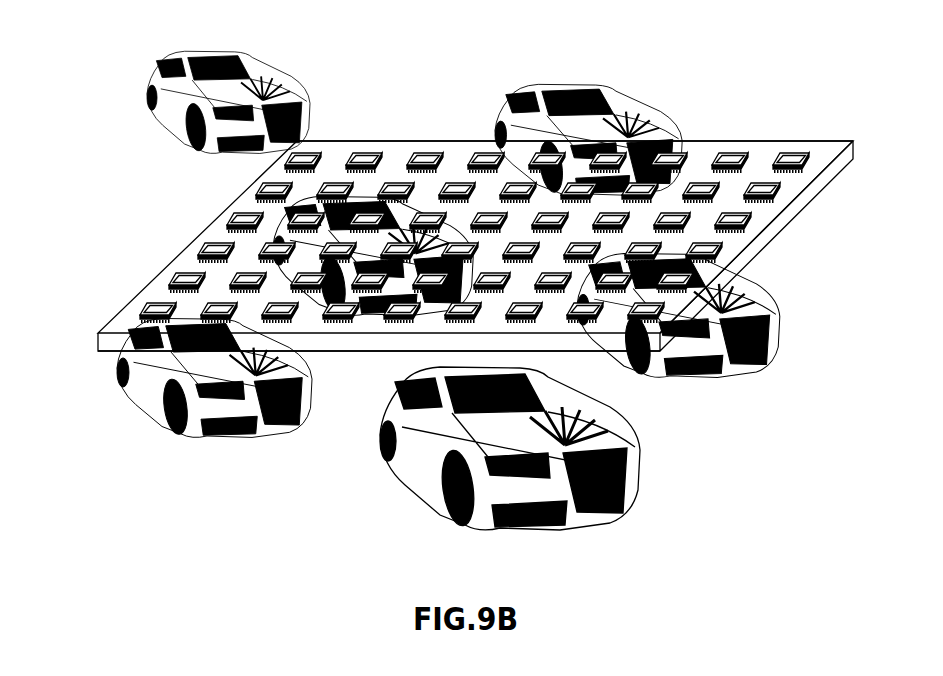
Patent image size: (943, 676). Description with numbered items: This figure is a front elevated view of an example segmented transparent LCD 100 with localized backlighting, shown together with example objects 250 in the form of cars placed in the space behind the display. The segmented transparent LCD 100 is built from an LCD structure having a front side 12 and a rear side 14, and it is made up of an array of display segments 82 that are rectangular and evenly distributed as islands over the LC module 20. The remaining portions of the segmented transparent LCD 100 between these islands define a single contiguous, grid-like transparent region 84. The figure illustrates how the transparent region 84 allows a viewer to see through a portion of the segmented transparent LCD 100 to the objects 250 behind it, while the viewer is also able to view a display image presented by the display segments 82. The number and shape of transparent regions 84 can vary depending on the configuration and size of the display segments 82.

The segmented transparent LCD 100 is at (340, 46).
The front side 12 is at (190, 257).
The rear side 14 is at (570, 350).
The LC module 20 is at (792, 211).
The display segment 82 is at (688, 139).
The transparent region 84 is at (337, 162).
The objects 250 is at (283, 228).